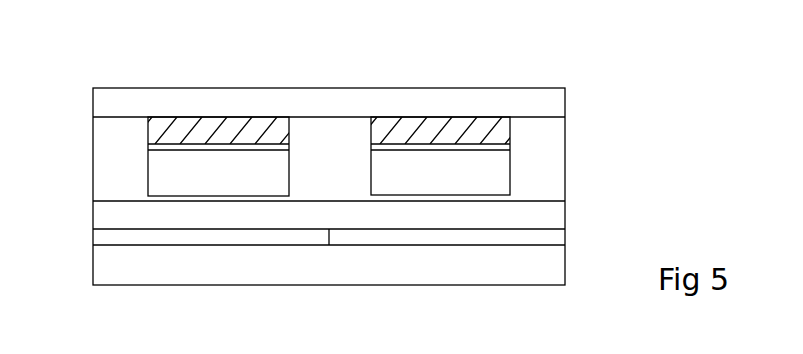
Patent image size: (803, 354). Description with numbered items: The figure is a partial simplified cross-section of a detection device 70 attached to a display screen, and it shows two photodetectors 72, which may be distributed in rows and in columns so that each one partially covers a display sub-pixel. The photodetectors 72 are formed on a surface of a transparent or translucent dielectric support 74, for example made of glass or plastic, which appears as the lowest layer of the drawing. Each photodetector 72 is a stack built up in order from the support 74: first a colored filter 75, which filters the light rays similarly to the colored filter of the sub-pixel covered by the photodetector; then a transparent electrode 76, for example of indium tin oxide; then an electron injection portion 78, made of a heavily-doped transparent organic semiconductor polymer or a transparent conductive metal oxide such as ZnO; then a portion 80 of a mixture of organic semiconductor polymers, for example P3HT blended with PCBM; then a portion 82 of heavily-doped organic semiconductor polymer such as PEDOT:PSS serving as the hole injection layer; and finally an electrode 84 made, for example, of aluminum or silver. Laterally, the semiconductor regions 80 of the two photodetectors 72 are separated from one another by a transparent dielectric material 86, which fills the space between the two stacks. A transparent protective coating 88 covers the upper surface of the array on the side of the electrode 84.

The detection device 70 is at (152, 55).
The photodetector 72 is at (224, 78).
The dielectric support 74 is at (324, 263).
The colored filter 75 is at (186, 240).
The transparent electrode 76 is at (117, 218).
The electron injection portion 78 is at (147, 198).
The semiconductor portion 80 is at (163, 160).
The hole injection portion 82 is at (165, 147).
The electrode 84 is at (185, 127).
The transparent dielectric material 86 is at (320, 130).
The transparent protective coating 88 is at (525, 100).